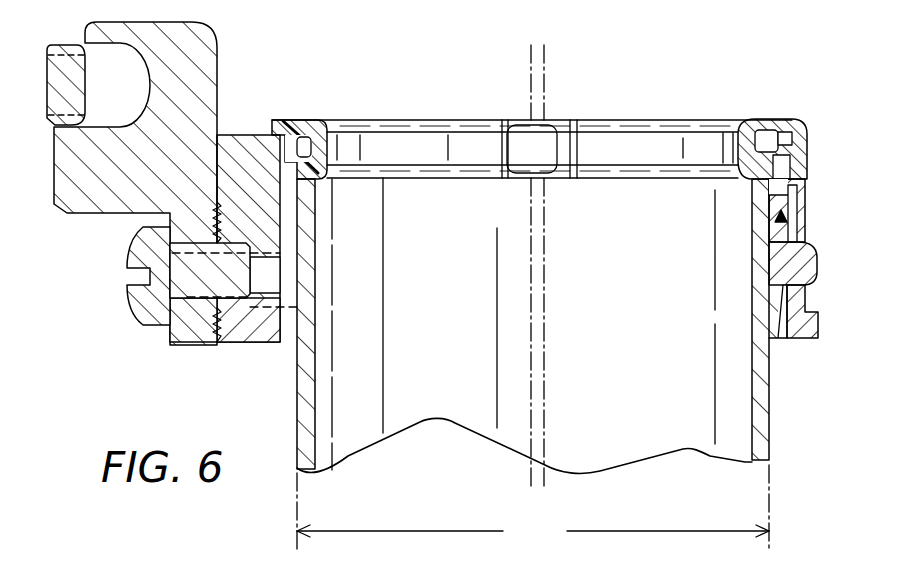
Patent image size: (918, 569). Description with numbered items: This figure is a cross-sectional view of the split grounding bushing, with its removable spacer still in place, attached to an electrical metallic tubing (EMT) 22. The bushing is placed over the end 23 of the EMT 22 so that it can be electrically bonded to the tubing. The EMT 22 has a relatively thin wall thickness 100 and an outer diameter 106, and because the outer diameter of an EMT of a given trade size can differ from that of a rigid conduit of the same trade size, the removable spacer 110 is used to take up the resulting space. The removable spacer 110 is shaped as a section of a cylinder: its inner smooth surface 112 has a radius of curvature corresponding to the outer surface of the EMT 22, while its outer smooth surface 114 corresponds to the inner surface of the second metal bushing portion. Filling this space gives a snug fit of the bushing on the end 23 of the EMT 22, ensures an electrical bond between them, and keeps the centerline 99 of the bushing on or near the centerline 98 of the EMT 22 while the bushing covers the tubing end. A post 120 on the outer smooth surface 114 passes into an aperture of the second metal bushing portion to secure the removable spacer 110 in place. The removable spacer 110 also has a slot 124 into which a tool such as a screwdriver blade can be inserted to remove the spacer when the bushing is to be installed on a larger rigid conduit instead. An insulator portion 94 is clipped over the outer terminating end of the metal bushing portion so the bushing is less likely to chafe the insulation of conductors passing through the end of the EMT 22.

The electrical metallic tubing (EMT) 22 is at (579, 270).
The end of the EMT 23 is at (313, 182).
The insulator portion 94 is at (760, 118).
The centerline of the EMT 98 is at (533, 103).
The centerline of the bushing 99 is at (544, 64).
The wall thickness of the EMT 100 is at (306, 300).
The outer diameter of the EMT 106 is at (533, 508).
The removable spacer 110 is at (806, 200).
The inner smooth surface 112 is at (767, 277).
The outer smooth surface 114 is at (806, 233).
The post 120 is at (818, 270).
The slot 124 is at (782, 322).